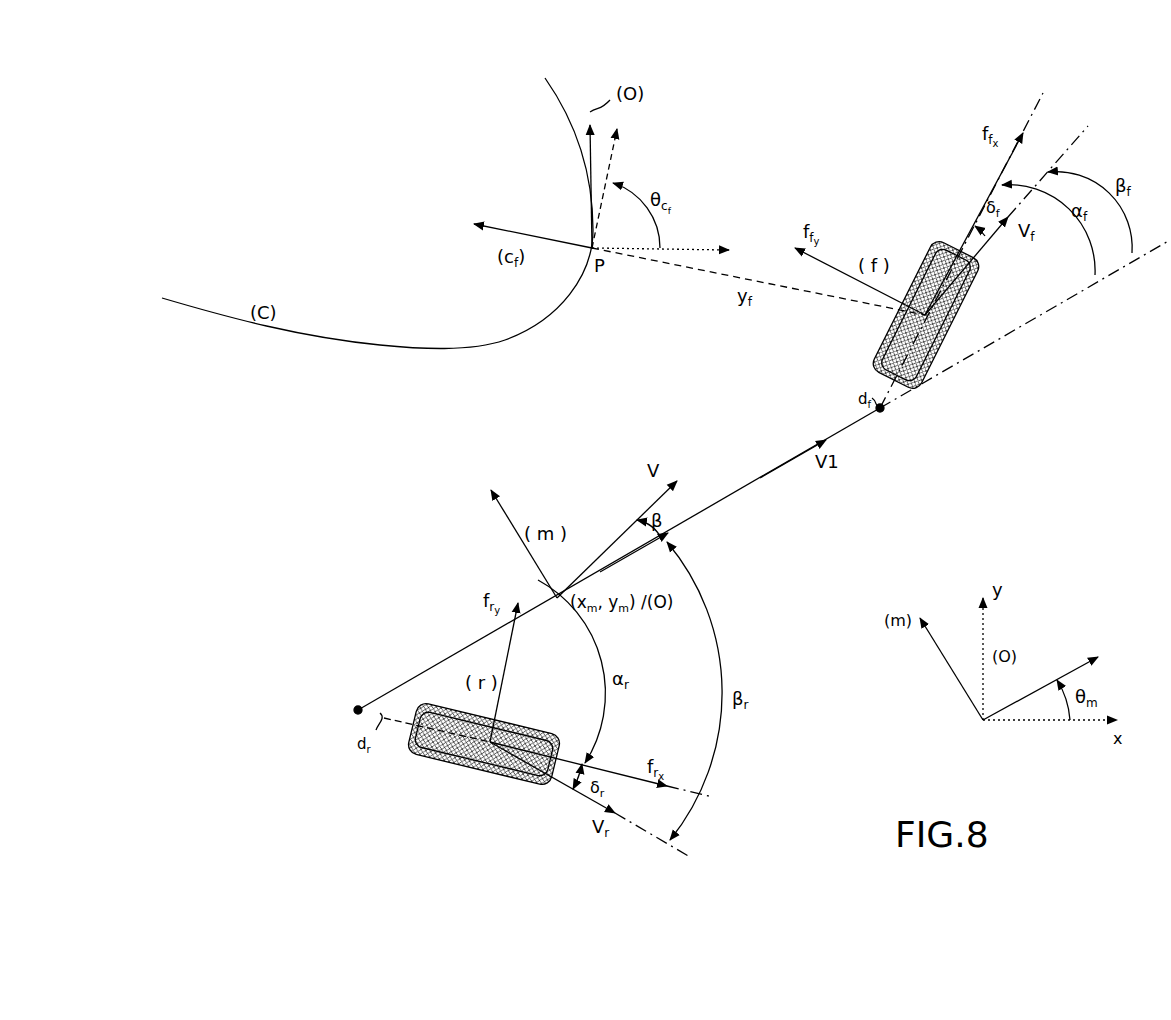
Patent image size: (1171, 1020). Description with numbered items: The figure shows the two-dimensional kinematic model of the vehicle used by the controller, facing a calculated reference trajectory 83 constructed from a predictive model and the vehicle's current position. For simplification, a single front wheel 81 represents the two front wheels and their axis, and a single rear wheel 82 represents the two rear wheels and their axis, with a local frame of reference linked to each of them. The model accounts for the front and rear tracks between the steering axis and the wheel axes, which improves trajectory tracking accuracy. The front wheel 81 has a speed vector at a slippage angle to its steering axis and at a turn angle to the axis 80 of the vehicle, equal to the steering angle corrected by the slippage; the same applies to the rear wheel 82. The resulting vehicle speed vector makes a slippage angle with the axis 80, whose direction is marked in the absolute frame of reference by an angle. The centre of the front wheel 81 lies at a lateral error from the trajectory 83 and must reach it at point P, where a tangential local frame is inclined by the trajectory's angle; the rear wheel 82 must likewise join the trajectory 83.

The axis of the vehicle 80 is at (1050, 307).
The front wheel 81 is at (945, 348).
The rear wheel 82 is at (433, 767).
The calculated trajectory 83 is at (465, 349).